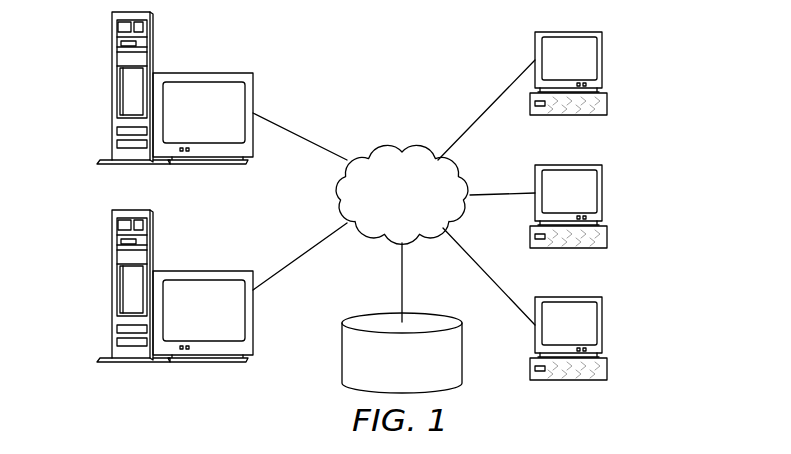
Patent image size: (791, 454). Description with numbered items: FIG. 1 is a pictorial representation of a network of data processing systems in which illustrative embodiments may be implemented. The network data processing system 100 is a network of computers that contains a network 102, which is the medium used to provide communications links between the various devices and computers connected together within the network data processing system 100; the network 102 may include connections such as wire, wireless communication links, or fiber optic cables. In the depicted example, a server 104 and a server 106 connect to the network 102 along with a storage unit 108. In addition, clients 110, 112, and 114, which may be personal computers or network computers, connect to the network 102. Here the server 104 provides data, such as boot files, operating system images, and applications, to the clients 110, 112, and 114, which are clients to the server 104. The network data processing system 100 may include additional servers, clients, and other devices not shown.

The network data processing system 100 is at (448, 52).
The network 102 is at (373, 148).
The server 104 is at (112, 88).
The server 106 is at (112, 286).
The storage unit 108 is at (342, 360).
The client 110 is at (602, 60).
The client 112 is at (602, 193).
The client 114 is at (602, 325).